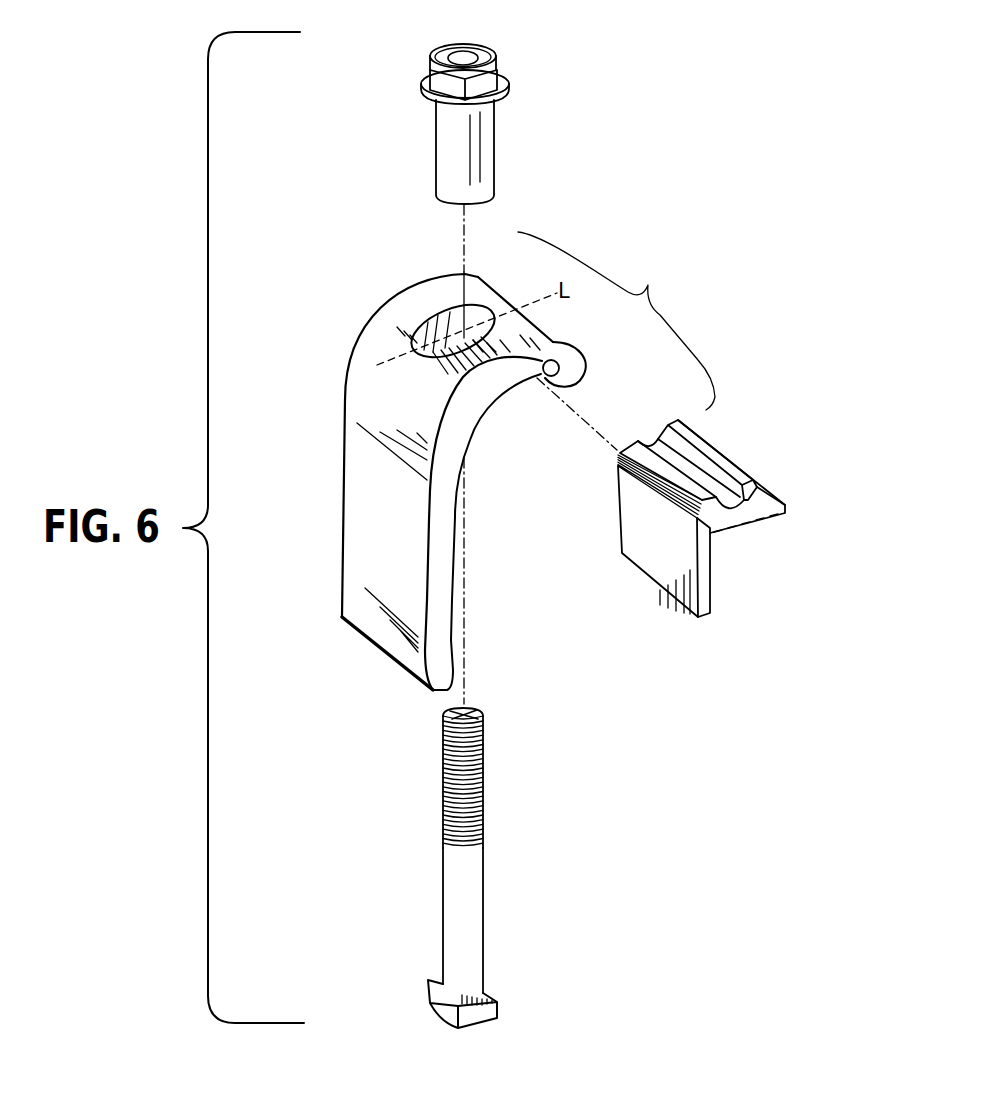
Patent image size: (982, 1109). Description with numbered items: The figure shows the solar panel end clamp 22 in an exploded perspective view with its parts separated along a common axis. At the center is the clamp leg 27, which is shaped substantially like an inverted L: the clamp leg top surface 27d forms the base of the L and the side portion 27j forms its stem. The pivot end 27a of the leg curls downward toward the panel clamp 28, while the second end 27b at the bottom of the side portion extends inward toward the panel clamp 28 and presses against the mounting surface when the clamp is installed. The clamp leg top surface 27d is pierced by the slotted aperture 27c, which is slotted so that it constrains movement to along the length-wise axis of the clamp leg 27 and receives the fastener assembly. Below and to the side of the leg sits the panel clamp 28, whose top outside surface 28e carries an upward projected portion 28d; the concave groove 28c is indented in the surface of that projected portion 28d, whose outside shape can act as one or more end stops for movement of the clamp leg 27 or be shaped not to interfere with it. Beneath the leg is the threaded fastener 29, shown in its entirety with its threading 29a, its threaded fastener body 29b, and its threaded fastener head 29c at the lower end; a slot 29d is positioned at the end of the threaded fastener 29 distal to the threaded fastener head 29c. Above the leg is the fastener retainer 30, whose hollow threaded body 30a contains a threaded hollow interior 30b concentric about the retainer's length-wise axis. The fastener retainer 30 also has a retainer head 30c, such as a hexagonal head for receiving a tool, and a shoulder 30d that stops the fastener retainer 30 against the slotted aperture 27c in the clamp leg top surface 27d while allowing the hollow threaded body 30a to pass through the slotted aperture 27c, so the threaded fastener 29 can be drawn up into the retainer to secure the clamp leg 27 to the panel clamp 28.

The solar panel end clamp 22 is at (616, 321).
The clamp leg 27 is at (464, 499).
The pivot end 27a is at (580, 364).
The second end 27b is at (398, 670).
The slotted aperture 27c is at (443, 310).
The clamp leg top surface 27d is at (380, 312).
The side portion 27j is at (343, 423).
The panel clamp 28 is at (703, 514).
The concave groove 28c is at (688, 463).
The projected portion 28d is at (745, 470).
The top outside surface 28e is at (777, 497).
The threaded fastener 29 is at (475, 869).
The threading 29a is at (487, 770).
The threaded fastener body 29b is at (443, 918).
The threaded fastener head 29c is at (500, 1010).
The slot 29d is at (472, 712).
The fastener retainer 30 is at (472, 106).
The hollow threaded body 30a is at (495, 132).
The threaded hollow interior 30b is at (485, 44).
The retainer head 30c is at (497, 68).
The shoulder 30d is at (507, 83).